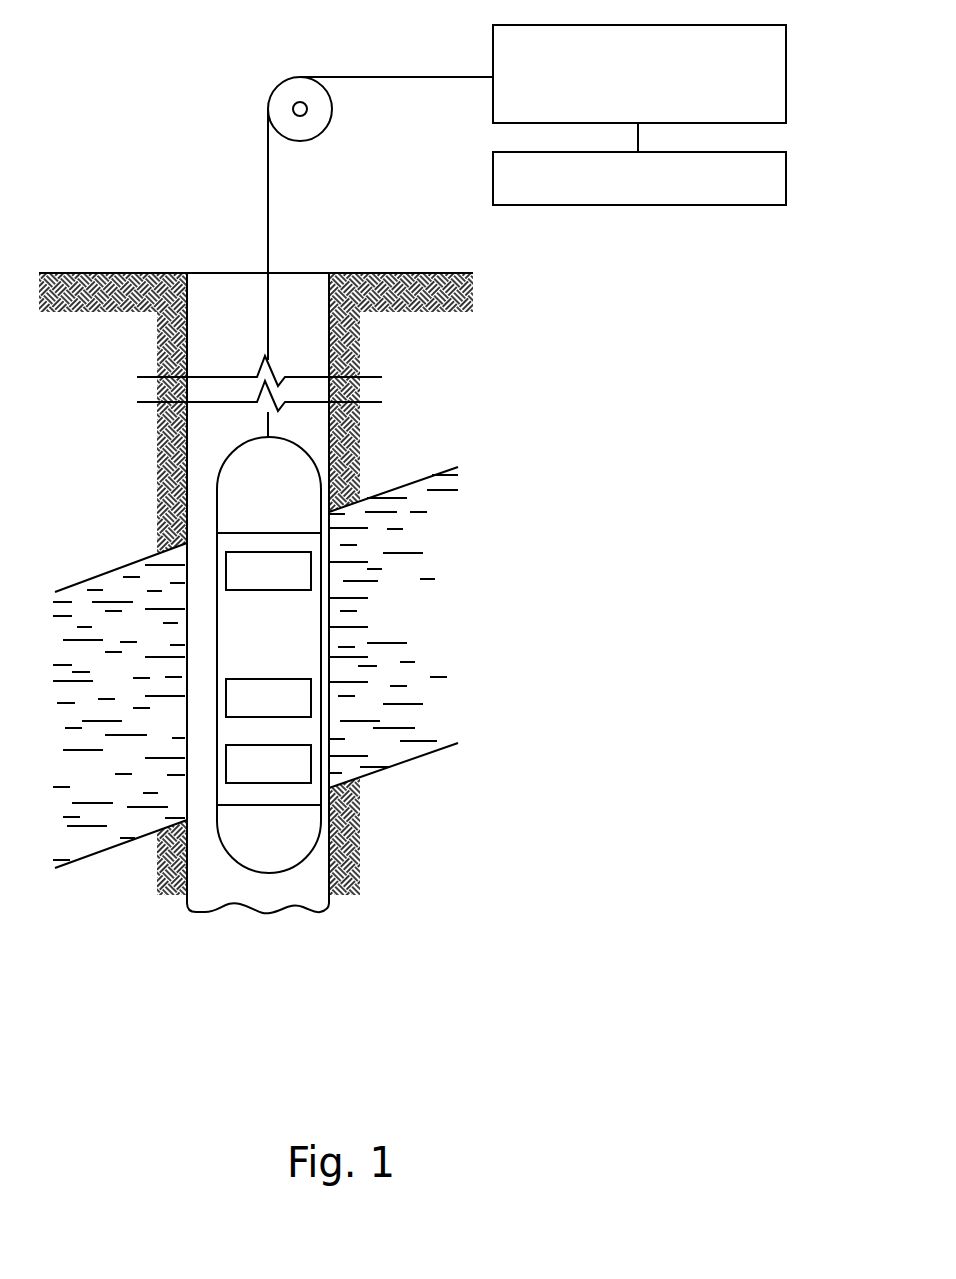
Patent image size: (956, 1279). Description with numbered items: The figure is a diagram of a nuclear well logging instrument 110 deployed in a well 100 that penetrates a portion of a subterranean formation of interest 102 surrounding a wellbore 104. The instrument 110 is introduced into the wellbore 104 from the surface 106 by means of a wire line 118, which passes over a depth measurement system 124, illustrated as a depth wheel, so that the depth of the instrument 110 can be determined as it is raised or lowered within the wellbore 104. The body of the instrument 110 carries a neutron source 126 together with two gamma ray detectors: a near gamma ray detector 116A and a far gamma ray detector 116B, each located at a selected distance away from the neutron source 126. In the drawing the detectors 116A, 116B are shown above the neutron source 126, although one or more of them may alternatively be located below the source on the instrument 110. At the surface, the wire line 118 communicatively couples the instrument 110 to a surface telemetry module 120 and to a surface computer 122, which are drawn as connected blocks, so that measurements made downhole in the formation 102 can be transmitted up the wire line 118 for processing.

The well 100 is at (420, 388).
The subterranean formation of interest 102 is at (449, 629).
The wellbore 104 is at (252, 333).
The surface 106 is at (170, 272).
The nuclear well logging instrument 110 is at (204, 643).
The near gamma ray detector 116A is at (268, 698).
The far gamma ray detector 116B is at (268, 571).
The wire line 118 is at (268, 240).
The surface telemetry module 120 is at (786, 71).
The surface computer 122 is at (786, 176).
The depth measurement system 124 is at (319, 133).
The neutron source 126 is at (268, 764).